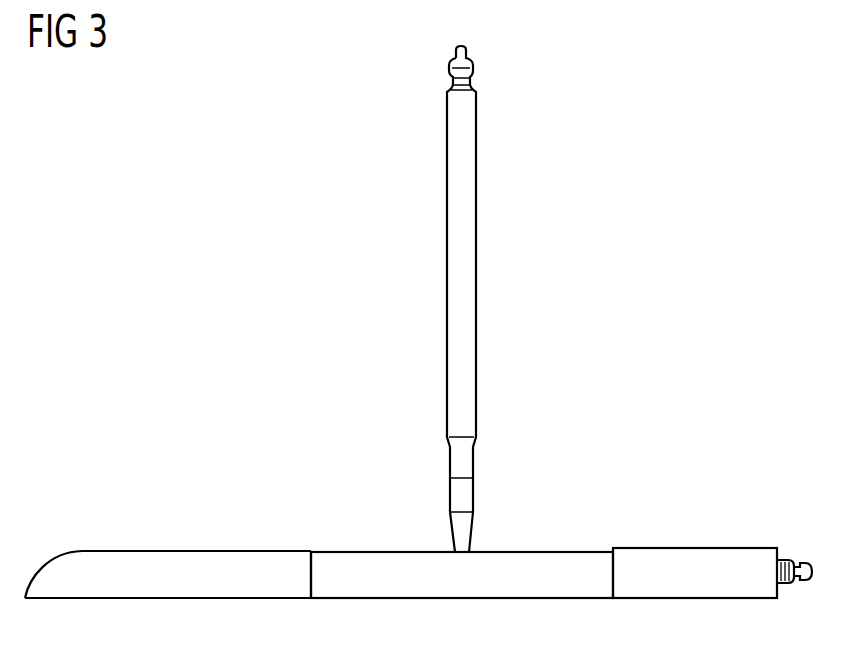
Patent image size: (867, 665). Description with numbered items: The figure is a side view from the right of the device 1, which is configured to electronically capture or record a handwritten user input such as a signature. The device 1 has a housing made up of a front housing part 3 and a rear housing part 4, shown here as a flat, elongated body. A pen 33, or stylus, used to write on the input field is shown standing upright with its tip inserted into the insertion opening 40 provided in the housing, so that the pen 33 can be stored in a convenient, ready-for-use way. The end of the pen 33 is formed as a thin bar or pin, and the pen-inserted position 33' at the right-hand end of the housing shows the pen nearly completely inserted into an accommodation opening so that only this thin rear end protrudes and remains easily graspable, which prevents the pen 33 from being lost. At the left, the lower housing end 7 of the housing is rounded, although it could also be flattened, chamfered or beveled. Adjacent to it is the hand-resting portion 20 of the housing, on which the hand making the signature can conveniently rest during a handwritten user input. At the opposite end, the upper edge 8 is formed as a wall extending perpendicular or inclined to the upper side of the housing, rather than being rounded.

The device 1 is at (648, 503).
The front housing part 3 is at (268, 561).
The rear housing part 4 is at (407, 593).
The lower housing end 7 is at (31, 582).
The upper edge 8 is at (778, 548).
The hand-resting portion 20 is at (191, 549).
The pen 33 is at (495, 299).
The pen-inserted position 33' is at (813, 543).
The insertion opening 40 is at (470, 551).